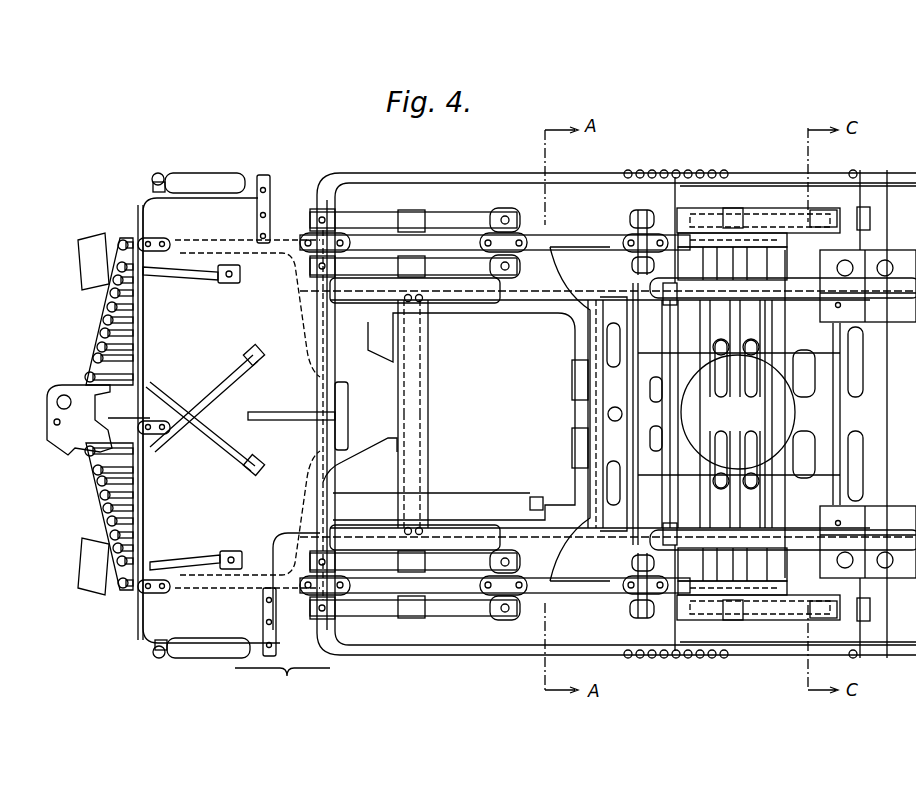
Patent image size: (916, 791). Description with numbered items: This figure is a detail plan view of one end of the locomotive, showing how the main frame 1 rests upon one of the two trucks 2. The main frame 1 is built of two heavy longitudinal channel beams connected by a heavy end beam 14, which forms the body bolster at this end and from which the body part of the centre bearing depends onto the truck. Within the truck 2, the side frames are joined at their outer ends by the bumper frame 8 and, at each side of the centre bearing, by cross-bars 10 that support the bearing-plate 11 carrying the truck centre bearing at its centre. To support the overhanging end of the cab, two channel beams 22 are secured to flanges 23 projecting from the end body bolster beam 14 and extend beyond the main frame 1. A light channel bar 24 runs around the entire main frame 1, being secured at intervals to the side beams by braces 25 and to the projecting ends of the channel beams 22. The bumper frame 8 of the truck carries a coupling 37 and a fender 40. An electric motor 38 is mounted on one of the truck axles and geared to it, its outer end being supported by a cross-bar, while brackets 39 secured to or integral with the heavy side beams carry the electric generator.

The frame 1 is at (767, 193).
The truck 2 is at (316, 525).
The bumper frame 8 is at (231, 415).
The cross-bar 10 is at (580, 414).
The bearing-plate 11 is at (798, 358).
The end beam 14 is at (738, 412).
The channel beam 22 is at (525, 290).
The flange 23 is at (765, 306).
The light channel bar 24 is at (443, 175).
The brace 25 is at (682, 196).
The coupling 37 is at (70, 394).
The electric motor 38 is at (460, 416).
The bracket 39 is at (868, 414).
The fender 40 is at (108, 506).